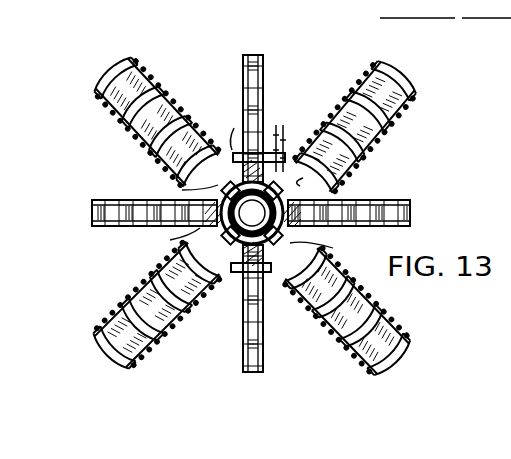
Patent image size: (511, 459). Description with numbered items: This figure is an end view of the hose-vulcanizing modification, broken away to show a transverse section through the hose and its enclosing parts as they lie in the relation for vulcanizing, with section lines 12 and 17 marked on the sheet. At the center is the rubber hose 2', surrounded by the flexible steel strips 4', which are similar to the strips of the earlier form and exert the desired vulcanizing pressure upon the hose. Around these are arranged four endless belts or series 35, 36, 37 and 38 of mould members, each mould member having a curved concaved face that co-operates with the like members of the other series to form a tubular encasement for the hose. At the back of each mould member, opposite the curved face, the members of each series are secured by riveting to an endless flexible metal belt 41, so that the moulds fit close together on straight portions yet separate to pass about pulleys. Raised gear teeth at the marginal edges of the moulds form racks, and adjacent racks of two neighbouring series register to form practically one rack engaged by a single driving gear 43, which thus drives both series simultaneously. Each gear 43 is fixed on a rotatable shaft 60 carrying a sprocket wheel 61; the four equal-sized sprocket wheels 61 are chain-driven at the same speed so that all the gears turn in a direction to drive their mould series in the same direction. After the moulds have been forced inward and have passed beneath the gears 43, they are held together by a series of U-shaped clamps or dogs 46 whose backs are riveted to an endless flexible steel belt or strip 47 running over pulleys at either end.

The rubber hose 2' is at (252, 212).
The flexible steel strips 4' is at (318, 185).
The section line 12 is at (240, 41).
The section line 17 is at (416, 47).
The endless series of mould members 35 is at (396, 126).
The endless series of mould members 36 is at (410, 338).
The endless series of mould members 37 is at (163, 348).
The endless series of mould members 38 is at (124, 128).
The endless flexible metal belt 41 is at (258, 218).
The driving gear 43 is at (264, 150).
The U-shaped clamps or dogs 46 is at (243, 85).
The endless flexible steel belt or strip 47 is at (174, 240).
The rotatable shaft 60 is at (223, 136).
The sprocket wheel 61 is at (290, 154).